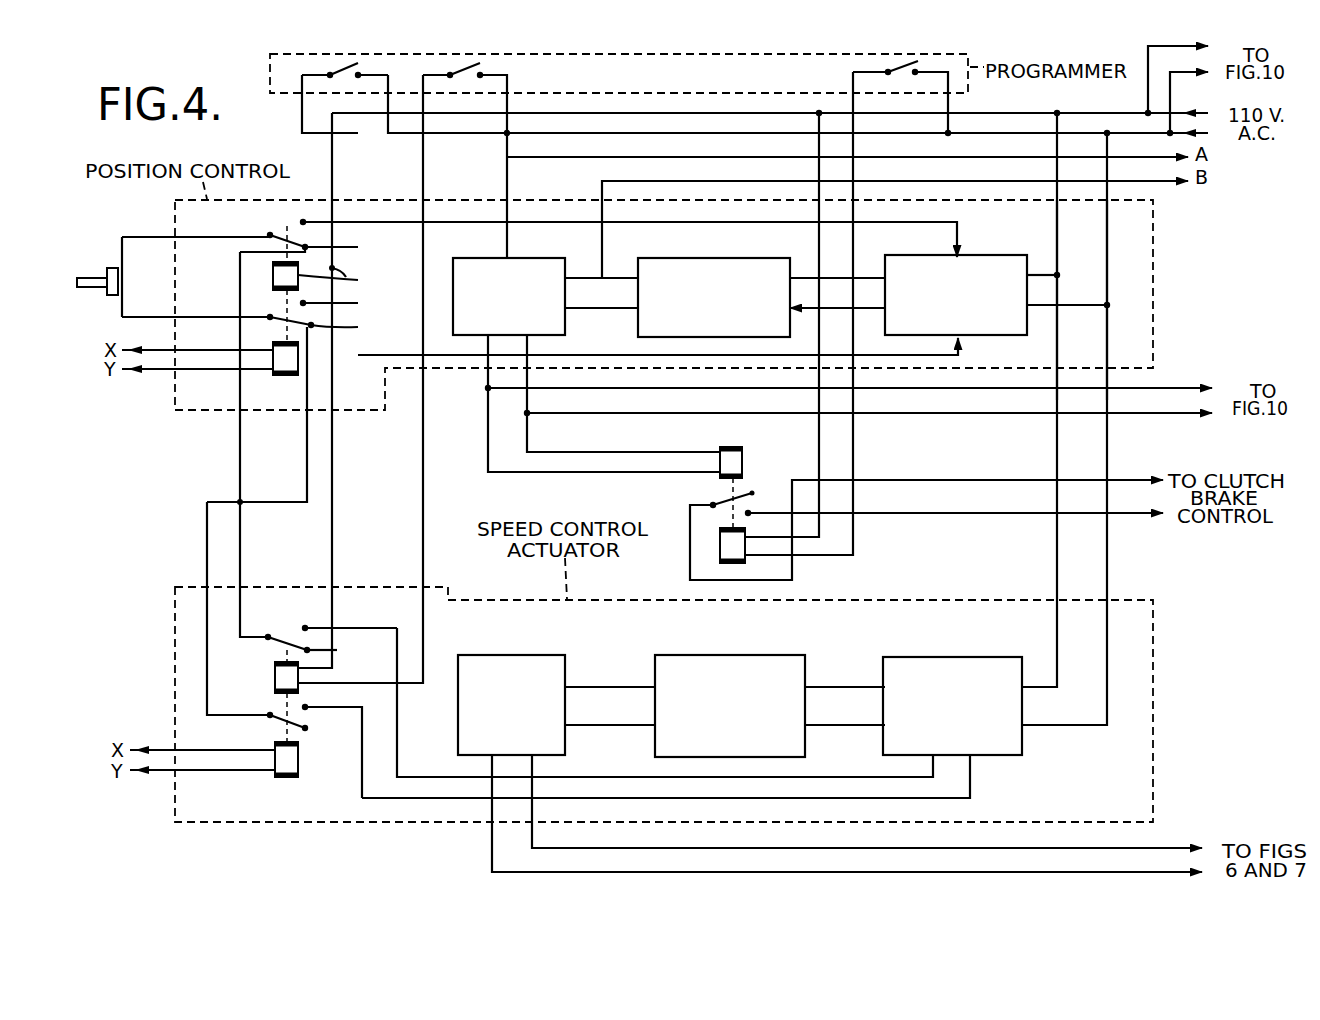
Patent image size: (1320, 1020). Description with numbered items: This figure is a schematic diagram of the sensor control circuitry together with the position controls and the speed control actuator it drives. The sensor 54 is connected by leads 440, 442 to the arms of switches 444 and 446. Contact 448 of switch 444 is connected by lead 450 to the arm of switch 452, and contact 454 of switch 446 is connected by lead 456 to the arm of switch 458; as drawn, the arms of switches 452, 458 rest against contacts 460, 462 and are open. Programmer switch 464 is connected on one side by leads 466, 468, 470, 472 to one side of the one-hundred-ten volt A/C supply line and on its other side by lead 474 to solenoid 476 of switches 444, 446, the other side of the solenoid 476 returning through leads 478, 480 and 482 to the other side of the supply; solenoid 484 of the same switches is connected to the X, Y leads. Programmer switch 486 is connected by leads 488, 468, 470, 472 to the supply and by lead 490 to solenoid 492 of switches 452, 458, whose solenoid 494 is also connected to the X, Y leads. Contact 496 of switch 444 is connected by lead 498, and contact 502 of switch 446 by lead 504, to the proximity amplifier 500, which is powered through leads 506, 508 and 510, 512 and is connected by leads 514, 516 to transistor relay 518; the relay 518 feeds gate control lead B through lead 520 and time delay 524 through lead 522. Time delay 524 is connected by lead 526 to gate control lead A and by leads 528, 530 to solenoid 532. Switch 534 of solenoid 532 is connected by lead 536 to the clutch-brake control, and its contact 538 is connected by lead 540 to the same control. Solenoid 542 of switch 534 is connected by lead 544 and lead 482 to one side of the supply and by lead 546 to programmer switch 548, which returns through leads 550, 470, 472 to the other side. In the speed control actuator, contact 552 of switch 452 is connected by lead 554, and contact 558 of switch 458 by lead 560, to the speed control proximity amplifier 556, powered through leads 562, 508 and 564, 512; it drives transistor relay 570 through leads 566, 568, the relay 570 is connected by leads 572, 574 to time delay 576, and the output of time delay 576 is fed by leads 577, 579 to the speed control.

The sensor 54 is at (85, 277).
The lead 440 is at (207, 237).
The lead 442 is at (197, 317).
The switch 444 is at (278, 234).
The switch 446 is at (268, 318).
The contact 448 is at (358, 247).
The lead 450 is at (239, 467).
The switch 452 is at (277, 634).
The contact 454 is at (358, 327).
The lead 456 is at (306, 455).
The switch 458 is at (278, 723).
The contact 460 is at (337, 649).
The contact 462 is at (305, 729).
The programmer switch 464 is at (344, 63).
The lead 466 is at (468, 135).
The lead 468 is at (633, 144).
The lead 470 is at (1022, 133).
The lead 472 is at (1157, 133).
The lead 474 is at (302, 118).
The solenoid 476 is at (273, 272).
The lead 478 is at (350, 277).
The lead 480 is at (332, 149).
The lead 482 is at (1087, 111).
The solenoid 484 is at (280, 375).
The programmer switch 486 is at (466, 63).
The lead 488 is at (508, 83).
The lead 490 is at (423, 497).
The solenoid 492 is at (275, 678).
The solenoid 494 is at (298, 762).
The contact 496 is at (303, 222).
The lead 498 is at (453, 224).
The proximity amplifier 500 is at (920, 257).
The contact 502 is at (303, 303).
The lead 504 is at (607, 347).
The lead 506 is at (1042, 273).
The lead 508 is at (1057, 262).
The lead 510 is at (1085, 307).
The lead 512 is at (1108, 287).
The lead 514 is at (805, 277).
The lead 516 is at (862, 307).
The transistor relay 518 is at (702, 261).
The lead 520 is at (607, 278).
The lead 522 is at (611, 308).
The time delay 524 is at (542, 261).
The lead 526 is at (508, 183).
The lead 528 is at (1187, 384).
The lead 530 is at (1180, 428).
The solenoid 532 is at (742, 462).
The switch 534 is at (730, 497).
The lead 536 is at (978, 479).
The contact 538 is at (749, 512).
The lead 540 is at (988, 515).
The solenoid 542 is at (720, 548).
The lead 544 is at (818, 437).
The lead 546 is at (858, 537).
The programmer switch 548 is at (902, 63).
The lead 550 is at (952, 102).
The contact 552 is at (305, 626).
The lead 554 is at (398, 723).
The speed control proximity amplifier 556 is at (955, 657).
The contact 558 is at (306, 708).
The lead 560 is at (362, 793).
The lead 562 is at (1055, 555).
The lead 564 is at (1110, 550).
The lead 566 is at (842, 686).
The lead 568 is at (838, 727).
The transistor relay 570 is at (730, 655).
The lead 572 is at (602, 686).
The lead 574 is at (608, 727).
The time delay 576 is at (508, 655).
The lead 577 is at (873, 850).
The lead 579 is at (762, 872).